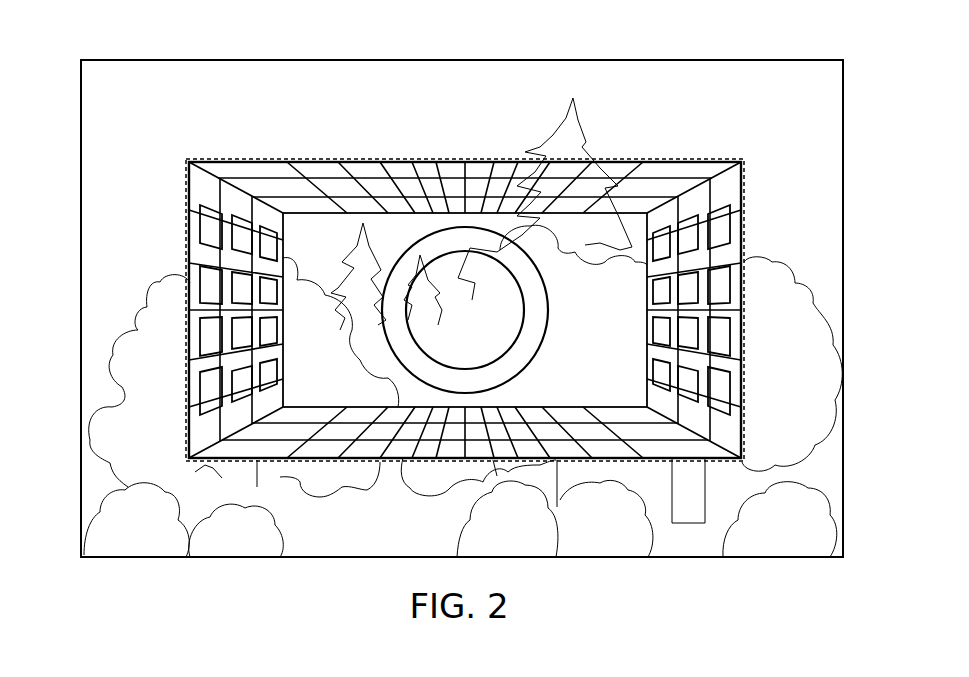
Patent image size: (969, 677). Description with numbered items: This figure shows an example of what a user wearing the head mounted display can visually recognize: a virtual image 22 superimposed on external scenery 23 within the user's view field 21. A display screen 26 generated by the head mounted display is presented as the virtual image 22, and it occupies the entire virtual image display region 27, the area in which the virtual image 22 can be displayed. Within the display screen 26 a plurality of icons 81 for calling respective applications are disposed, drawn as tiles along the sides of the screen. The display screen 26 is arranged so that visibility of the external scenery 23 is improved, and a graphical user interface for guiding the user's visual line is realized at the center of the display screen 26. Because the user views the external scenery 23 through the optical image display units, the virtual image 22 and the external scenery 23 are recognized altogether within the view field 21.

The view field 21 is at (733, 60).
The virtual image 22 is at (463, 148).
The external scenery 23 is at (797, 72).
The display screen 26 is at (691, 160).
The virtual image display region 27 is at (743, 184).
The icons 81 is at (209, 348).